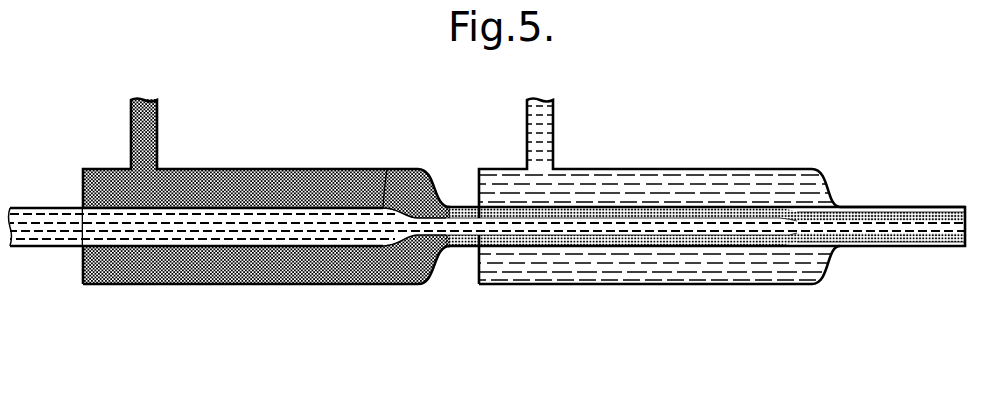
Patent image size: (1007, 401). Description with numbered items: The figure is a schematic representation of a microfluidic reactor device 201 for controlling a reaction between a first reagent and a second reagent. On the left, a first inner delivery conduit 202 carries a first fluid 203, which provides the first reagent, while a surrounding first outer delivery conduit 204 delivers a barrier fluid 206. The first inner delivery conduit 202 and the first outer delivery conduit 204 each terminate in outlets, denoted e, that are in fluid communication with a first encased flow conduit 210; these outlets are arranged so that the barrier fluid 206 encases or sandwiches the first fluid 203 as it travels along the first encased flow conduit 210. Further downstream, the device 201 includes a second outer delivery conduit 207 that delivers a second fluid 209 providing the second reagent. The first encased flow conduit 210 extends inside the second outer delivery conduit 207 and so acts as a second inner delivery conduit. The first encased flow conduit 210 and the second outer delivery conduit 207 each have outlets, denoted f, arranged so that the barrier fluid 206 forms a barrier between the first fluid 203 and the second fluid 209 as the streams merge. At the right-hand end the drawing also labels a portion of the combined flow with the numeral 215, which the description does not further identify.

The microfluidic reactor device 201 is at (359, 104).
The first inner delivery conduit 202 is at (43, 208).
The first fluid 203 is at (53, 234).
The first outer delivery conduit 204 is at (288, 168).
The barrier fluid 206 is at (192, 267).
The second outer delivery conduit 207 is at (627, 168).
The second fluid 209 is at (705, 190).
The first encased flow conduit 210 is at (572, 247).
The thin-walled section 215 is at (912, 207).
The outlets e is at (387, 169).
The outlets f is at (782, 207).